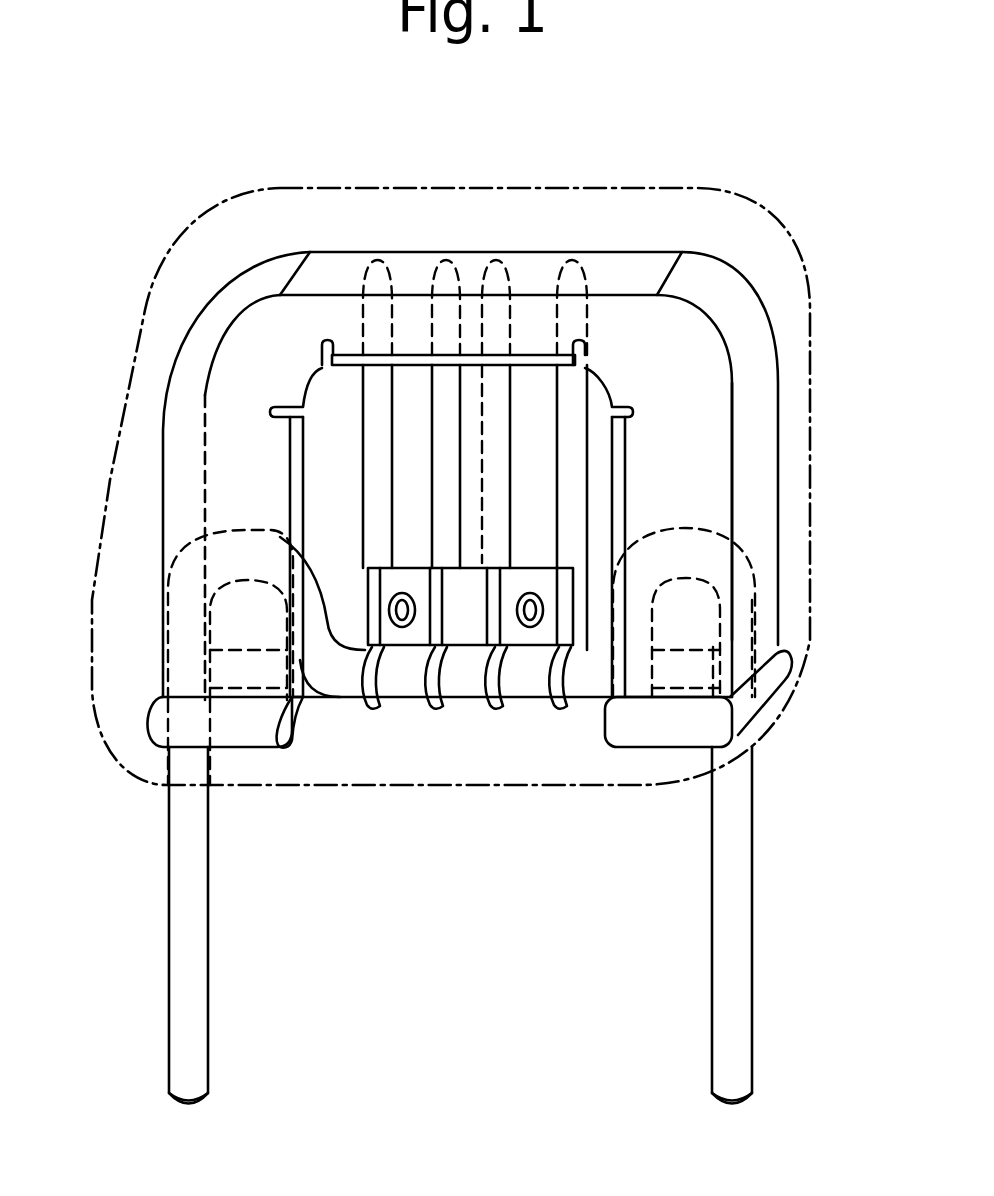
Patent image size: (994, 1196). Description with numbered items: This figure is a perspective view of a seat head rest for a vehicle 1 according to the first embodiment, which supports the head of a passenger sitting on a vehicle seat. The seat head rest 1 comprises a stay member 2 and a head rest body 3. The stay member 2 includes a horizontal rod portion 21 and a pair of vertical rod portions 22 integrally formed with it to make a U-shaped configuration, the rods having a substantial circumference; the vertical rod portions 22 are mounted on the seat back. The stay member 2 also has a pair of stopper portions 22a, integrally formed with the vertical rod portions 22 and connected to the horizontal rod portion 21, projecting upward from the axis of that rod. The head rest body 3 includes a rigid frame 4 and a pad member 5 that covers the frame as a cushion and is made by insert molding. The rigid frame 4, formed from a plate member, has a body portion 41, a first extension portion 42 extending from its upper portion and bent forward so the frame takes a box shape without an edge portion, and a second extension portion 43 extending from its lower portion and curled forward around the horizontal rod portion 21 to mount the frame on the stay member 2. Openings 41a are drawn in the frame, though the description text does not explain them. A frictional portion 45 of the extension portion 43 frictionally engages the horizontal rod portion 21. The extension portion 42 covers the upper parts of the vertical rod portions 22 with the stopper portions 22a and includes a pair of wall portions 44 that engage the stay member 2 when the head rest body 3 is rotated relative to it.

The seat head rest for a vehicle 1 is at (465, 593).
The stay member 2 is at (500, 852).
The head rest body 3 is at (486, 497).
The rigid frame 4 is at (513, 582).
The pad member 5 is at (692, 180).
The horizontal rod portion 21 is at (343, 680).
The vertical rod portions 22 is at (192, 983).
The stopper portions 22a is at (225, 562).
The body portion 41 is at (451, 517).
The through hole 41a is at (402, 630).
The first extension portion 42 is at (693, 468).
The second extension portion 43 is at (497, 741).
The wall portions 44 is at (250, 753).
The frictional portion 45 is at (514, 708).